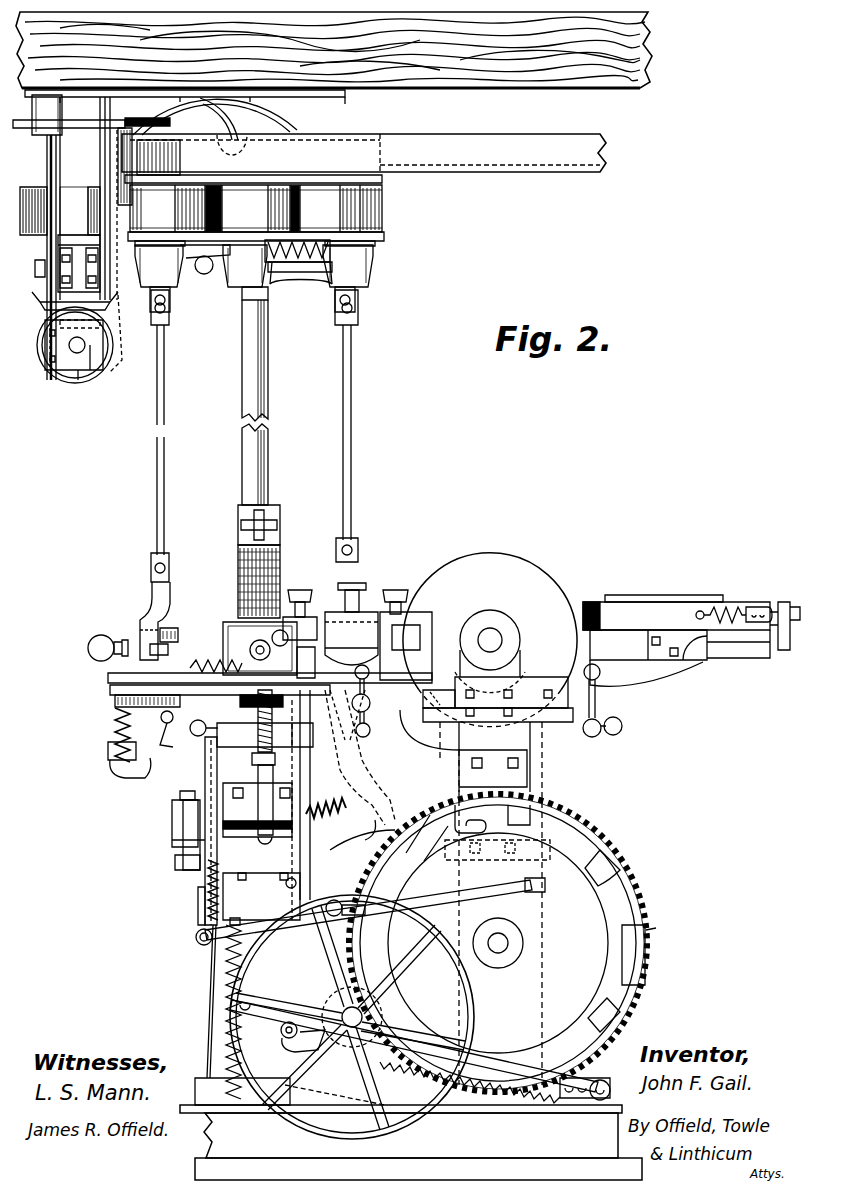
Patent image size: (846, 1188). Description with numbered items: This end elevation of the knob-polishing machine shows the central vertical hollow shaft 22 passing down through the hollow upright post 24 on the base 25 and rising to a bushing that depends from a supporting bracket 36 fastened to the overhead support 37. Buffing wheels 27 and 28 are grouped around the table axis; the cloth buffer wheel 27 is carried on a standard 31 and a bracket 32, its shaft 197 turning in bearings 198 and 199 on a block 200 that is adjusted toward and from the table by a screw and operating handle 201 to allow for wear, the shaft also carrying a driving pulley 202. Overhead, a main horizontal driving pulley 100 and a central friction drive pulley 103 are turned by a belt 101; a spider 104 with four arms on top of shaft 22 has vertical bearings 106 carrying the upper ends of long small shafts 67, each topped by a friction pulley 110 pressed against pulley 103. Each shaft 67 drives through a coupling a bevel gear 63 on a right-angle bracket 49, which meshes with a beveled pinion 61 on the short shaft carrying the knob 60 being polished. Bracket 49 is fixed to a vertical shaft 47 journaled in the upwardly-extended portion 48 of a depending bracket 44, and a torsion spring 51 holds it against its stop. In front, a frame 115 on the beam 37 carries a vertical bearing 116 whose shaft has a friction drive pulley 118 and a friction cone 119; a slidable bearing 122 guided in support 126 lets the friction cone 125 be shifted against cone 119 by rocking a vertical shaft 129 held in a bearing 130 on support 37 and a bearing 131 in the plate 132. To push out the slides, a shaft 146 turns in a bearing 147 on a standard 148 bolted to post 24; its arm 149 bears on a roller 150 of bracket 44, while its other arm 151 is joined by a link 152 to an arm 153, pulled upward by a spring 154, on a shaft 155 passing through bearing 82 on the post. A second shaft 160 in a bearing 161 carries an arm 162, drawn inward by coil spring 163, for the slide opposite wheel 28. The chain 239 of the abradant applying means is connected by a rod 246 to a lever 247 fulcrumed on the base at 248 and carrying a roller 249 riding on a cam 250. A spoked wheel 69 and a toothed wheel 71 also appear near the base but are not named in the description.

The central vertical hollow shaft 22 is at (268, 480).
The hollow upright standard 24 is at (215, 1001).
The base 25 is at (411, 1129).
The buffing wheel 27 is at (280, 548).
The buffing wheel 28 is at (490, 640).
The standard 31 is at (540, 780).
The bracket 32 is at (427, 755).
The supporting bracket 36 is at (282, 124).
The overhead support 37 is at (480, 84).
The depending bracket 44 is at (187, 733).
The vertical shaft 47 is at (112, 722).
The upwardly-extended portion 48 is at (125, 774).
The right-angle bracket 49 is at (392, 596).
The torsion spring 51 is at (108, 752).
The knob 60 is at (95, 637).
The beveled pinion 61 is at (178, 646).
The bevel gear 63 is at (178, 635).
The long small shaft 67 is at (164, 500).
The flywheel 69 is at (380, 1003).
The gear wheel 71 is at (468, 985).
The bearing 82 is at (312, 880).
The main horizontal driving pulley 100 is at (360, 130).
The belt 101 is at (498, 174).
The central friction drive pulley 103 is at (218, 278).
The spider 104 is at (305, 272).
The vertical bearing 106 is at (378, 268).
The friction pulley 110 is at (398, 200).
The frame 115 is at (118, 310).
The vertical bearing 116 is at (58, 268).
The friction drive pulley 118 is at (68, 198).
The friction cone 119 is at (45, 305).
The slidable bearing 122 is at (90, 370).
The friction cone 125 is at (62, 372).
The guiding support 126 is at (100, 345).
The vertical shaft 129 is at (58, 163).
The bearing 130 is at (70, 106).
The bearing 131 is at (45, 375).
The plate 132 is at (78, 370).
The shaft 146 is at (172, 815).
The bearing 147 is at (240, 850).
The standard 148 is at (240, 775).
The arm 149 is at (258, 762).
The roller 150 is at (350, 702).
The arm 151 is at (175, 840).
The link 152 is at (198, 896).
The arm 153 is at (282, 930).
The spring 154 is at (200, 880).
The shaft 155 is at (348, 918).
The shaft 160 is at (362, 846).
The bearing 161 is at (326, 820).
The arm 162 is at (378, 775).
The coil expansion spring 163 is at (385, 780).
The shaft 197 is at (338, 615).
The bearing 198 is at (305, 598).
The bearing 199 is at (430, 616).
The block 200 is at (420, 682).
The screw and operating handle 201 is at (408, 722).
The driving pulley 202 is at (351, 638).
The chain 239 is at (240, 905).
The rod 246 is at (290, 1005).
The lever 247 is at (282, 1045).
The fulcrum 248 is at (608, 1066).
The roller 249 is at (425, 1083).
The cam 250 is at (630, 930).